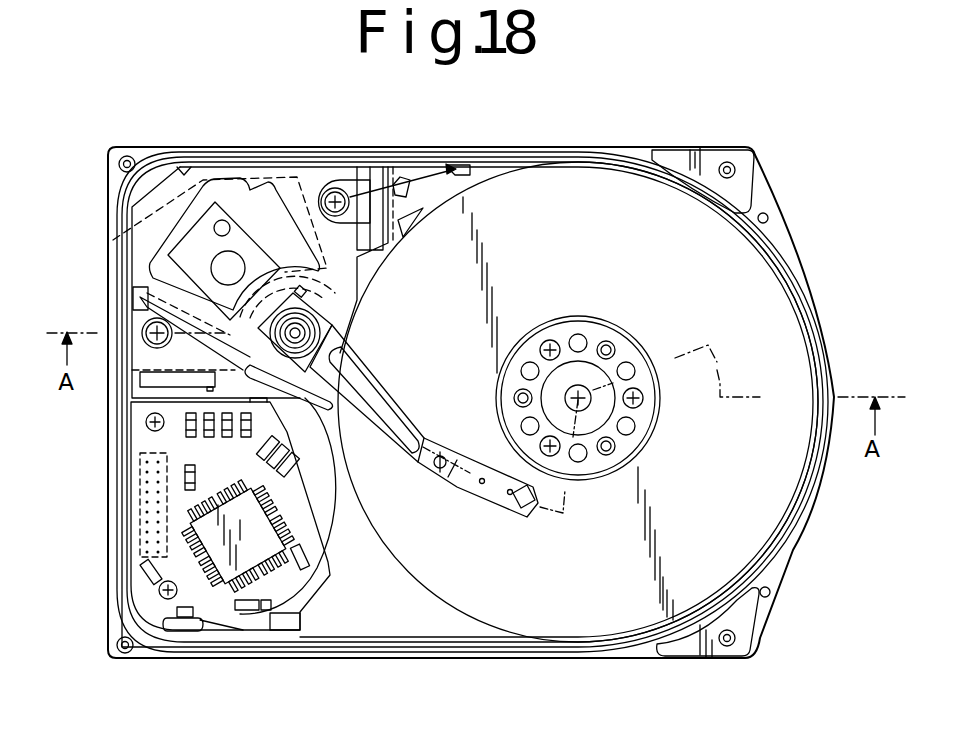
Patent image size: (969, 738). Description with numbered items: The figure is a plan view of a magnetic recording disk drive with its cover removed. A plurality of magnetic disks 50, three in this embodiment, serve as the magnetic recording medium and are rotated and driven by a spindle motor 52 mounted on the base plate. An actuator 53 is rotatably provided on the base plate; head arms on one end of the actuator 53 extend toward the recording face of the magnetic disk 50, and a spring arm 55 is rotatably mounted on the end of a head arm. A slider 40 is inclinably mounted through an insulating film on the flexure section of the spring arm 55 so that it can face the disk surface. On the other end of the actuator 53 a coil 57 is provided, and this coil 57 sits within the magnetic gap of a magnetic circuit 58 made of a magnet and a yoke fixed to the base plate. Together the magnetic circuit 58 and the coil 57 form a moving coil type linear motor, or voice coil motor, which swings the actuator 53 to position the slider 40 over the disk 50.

The magnetic disk 50 is at (757, 534).
The spindle motor 52 is at (605, 486).
The slider 40 is at (527, 517).
The spring arm 55 is at (458, 490).
The actuator 53 is at (380, 363).
The coil 57 is at (203, 200).
The magnetic circuit 58 is at (297, 176).